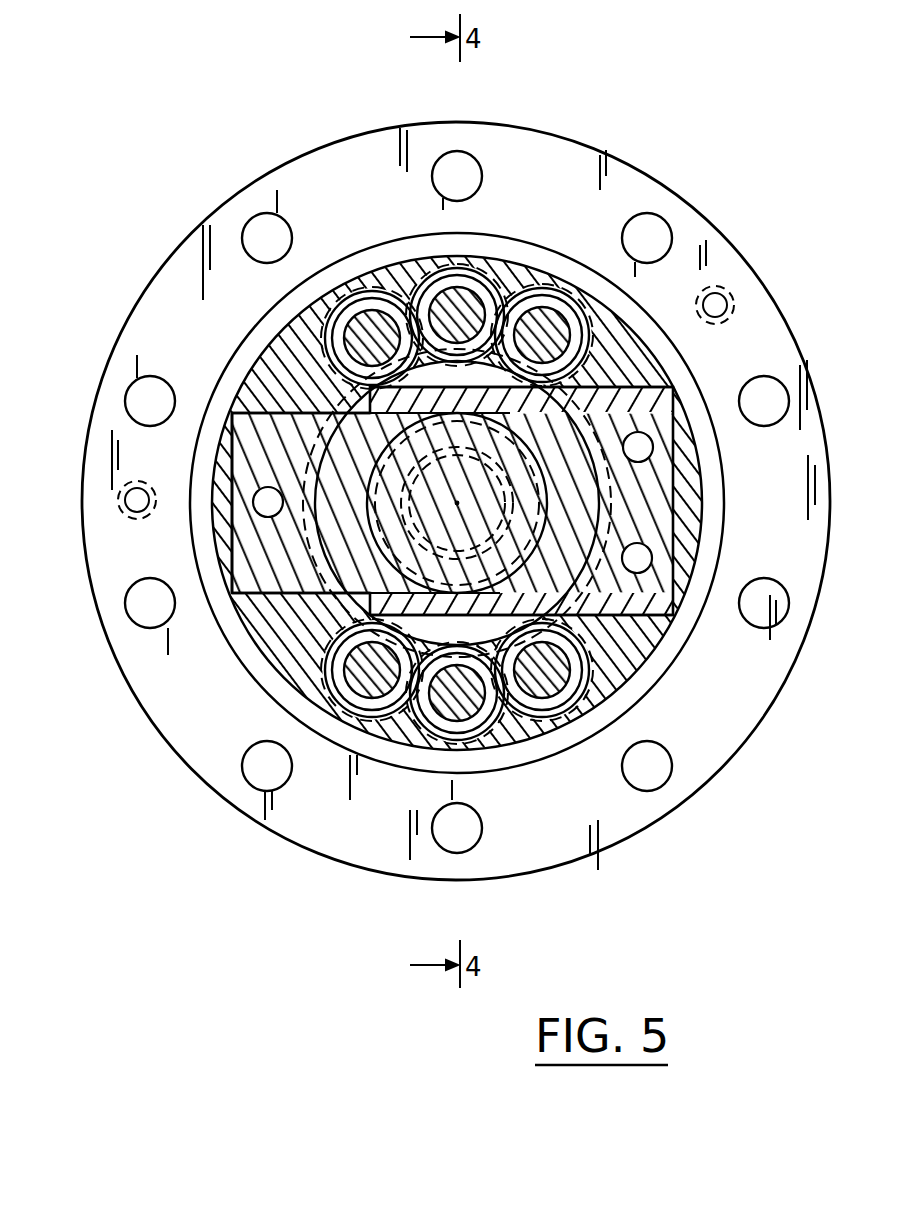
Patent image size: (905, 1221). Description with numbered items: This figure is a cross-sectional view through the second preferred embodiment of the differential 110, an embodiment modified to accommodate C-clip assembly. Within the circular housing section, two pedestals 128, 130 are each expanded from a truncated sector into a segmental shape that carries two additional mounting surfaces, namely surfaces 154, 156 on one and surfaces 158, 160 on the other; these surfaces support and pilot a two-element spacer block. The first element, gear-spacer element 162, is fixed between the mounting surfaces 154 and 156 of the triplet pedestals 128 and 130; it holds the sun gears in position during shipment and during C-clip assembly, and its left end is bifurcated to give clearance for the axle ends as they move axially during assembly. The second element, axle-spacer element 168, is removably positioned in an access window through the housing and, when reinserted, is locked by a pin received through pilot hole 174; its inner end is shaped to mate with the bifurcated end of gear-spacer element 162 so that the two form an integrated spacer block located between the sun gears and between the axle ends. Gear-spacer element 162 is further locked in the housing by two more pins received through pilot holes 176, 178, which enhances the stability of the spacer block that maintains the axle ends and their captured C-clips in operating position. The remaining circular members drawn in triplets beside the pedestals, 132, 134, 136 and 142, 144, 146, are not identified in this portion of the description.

The connector assembly 110 is at (148, 102).
The pedestal 128 is at (280, 373).
The pedestal 130 is at (263, 663).
The first upper tube 132 is at (357, 323).
The second upper tube 134 is at (460, 323).
The third upper tube 136 is at (523, 323).
The first lower tube 142 is at (575, 667).
The second lower tube 144 is at (465, 700).
The third lower tube 146 is at (357, 673).
The mounting surface 154 is at (655, 395).
The mounting surface 156 is at (678, 607).
The mounting surface 158 is at (278, 412).
The mounting surface 160 is at (227, 588).
The gear-spacer element 162 is at (655, 485).
The axle-spacer element 168 is at (260, 458).
The pilot hole 174 is at (254, 506).
The pilot hole 176 is at (650, 444).
The pilot hole 178 is at (648, 557).